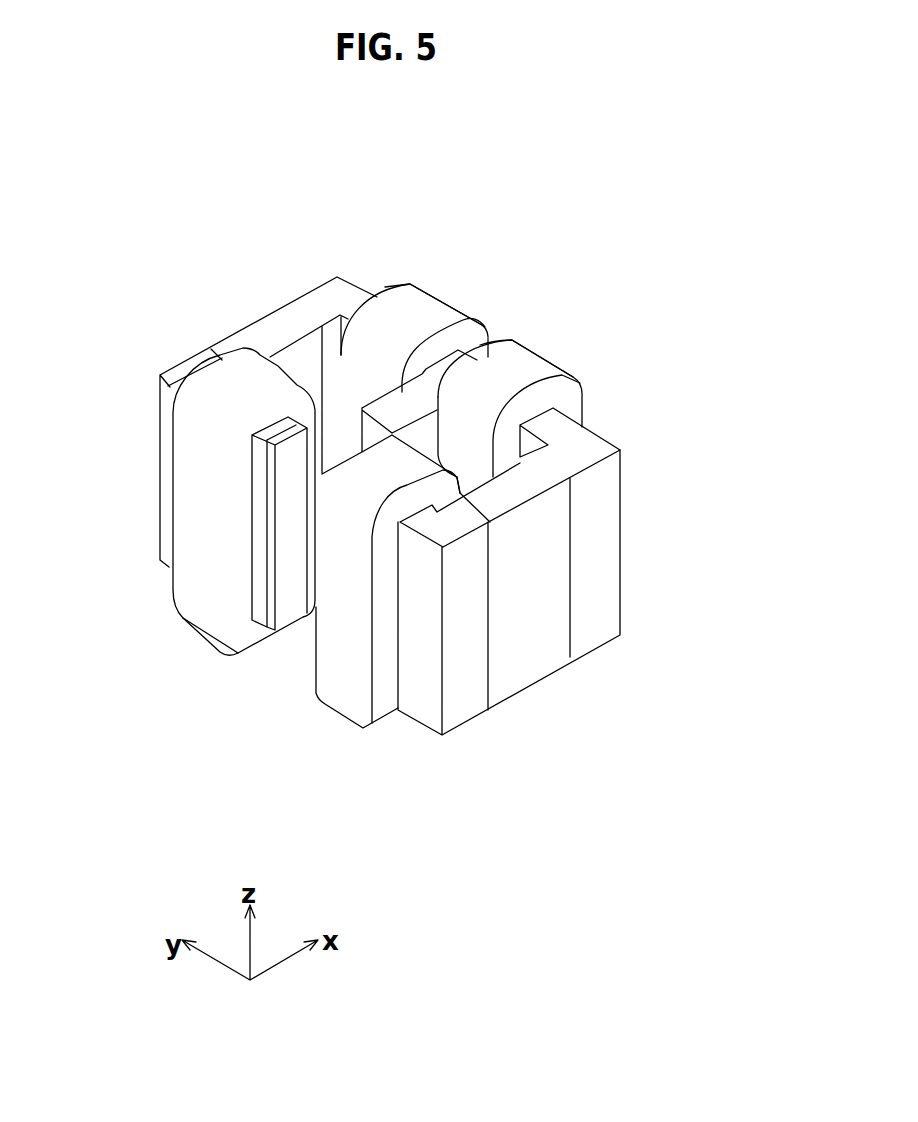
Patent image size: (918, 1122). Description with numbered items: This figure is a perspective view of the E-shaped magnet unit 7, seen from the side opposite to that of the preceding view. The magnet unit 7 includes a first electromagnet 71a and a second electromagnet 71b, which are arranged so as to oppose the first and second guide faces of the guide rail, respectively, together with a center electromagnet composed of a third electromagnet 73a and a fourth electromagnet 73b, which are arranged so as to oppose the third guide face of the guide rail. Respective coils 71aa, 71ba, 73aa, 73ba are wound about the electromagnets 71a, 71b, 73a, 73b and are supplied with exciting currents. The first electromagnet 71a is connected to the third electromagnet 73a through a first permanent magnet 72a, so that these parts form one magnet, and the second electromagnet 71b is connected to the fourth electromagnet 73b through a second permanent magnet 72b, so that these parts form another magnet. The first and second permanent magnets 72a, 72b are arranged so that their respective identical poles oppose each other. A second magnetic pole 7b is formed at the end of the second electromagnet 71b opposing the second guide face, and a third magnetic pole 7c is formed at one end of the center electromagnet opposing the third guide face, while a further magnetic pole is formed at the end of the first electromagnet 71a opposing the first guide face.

The magnet unit 7 is at (485, 305).
The second magnetic pole 7b is at (288, 612).
The third magnetic pole 7c is at (340, 402).
The first electromagnet 71a is at (460, 707).
The coil 71aa is at (342, 698).
The second electromagnet 71b is at (163, 468).
The coil 71ba is at (192, 608).
The first permanent magnet 72a is at (552, 655).
The second permanent magnet 72b is at (262, 327).
The third electromagnet 73a is at (583, 450).
The coil 73aa is at (527, 363).
The fourth electromagnet 73b is at (352, 283).
The coil 73ba is at (412, 300).